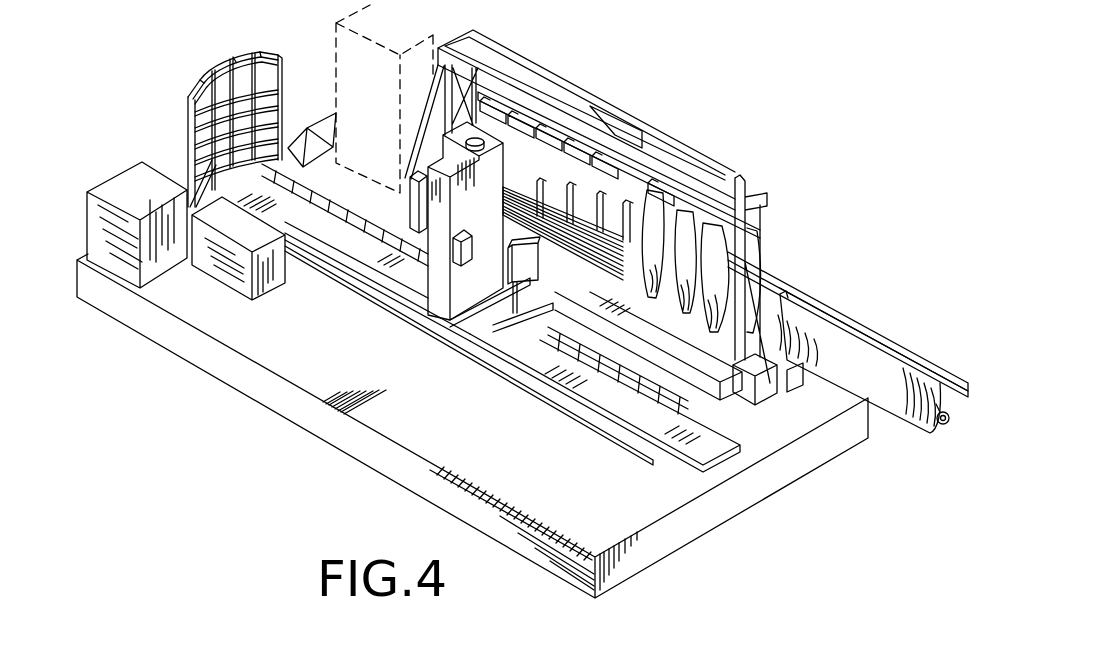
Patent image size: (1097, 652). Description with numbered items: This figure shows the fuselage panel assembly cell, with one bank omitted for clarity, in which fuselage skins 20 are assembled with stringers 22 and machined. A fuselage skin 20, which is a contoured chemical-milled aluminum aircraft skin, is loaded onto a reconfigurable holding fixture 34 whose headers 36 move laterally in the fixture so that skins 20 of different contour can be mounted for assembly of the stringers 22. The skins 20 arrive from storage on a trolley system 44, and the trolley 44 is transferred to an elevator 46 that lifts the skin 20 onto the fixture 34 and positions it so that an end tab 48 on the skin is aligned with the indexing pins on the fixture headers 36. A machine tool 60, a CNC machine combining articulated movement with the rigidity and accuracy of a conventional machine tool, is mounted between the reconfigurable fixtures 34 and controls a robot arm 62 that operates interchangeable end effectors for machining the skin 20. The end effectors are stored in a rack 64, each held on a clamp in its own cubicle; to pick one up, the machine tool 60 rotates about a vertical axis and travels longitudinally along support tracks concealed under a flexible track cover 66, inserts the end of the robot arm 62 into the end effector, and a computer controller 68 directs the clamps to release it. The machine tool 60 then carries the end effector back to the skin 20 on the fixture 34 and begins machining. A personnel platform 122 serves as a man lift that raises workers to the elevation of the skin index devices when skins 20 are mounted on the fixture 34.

The fuselage skin 20 is at (618, 203).
The stringer 22 is at (685, 215).
The reconfigurable holding fixture 34 is at (770, 176).
The header 36 is at (763, 273).
The trolley system 44 is at (883, 333).
The elevator 46 is at (530, 93).
The end tab 48 is at (943, 411).
The machine tool 60 is at (488, 186).
The robot arm 62 is at (510, 243).
The rack 64 is at (223, 62).
The flexible track cover 66 is at (707, 447).
The computer controller 68 is at (243, 278).
The personnel platform 122 is at (720, 370).